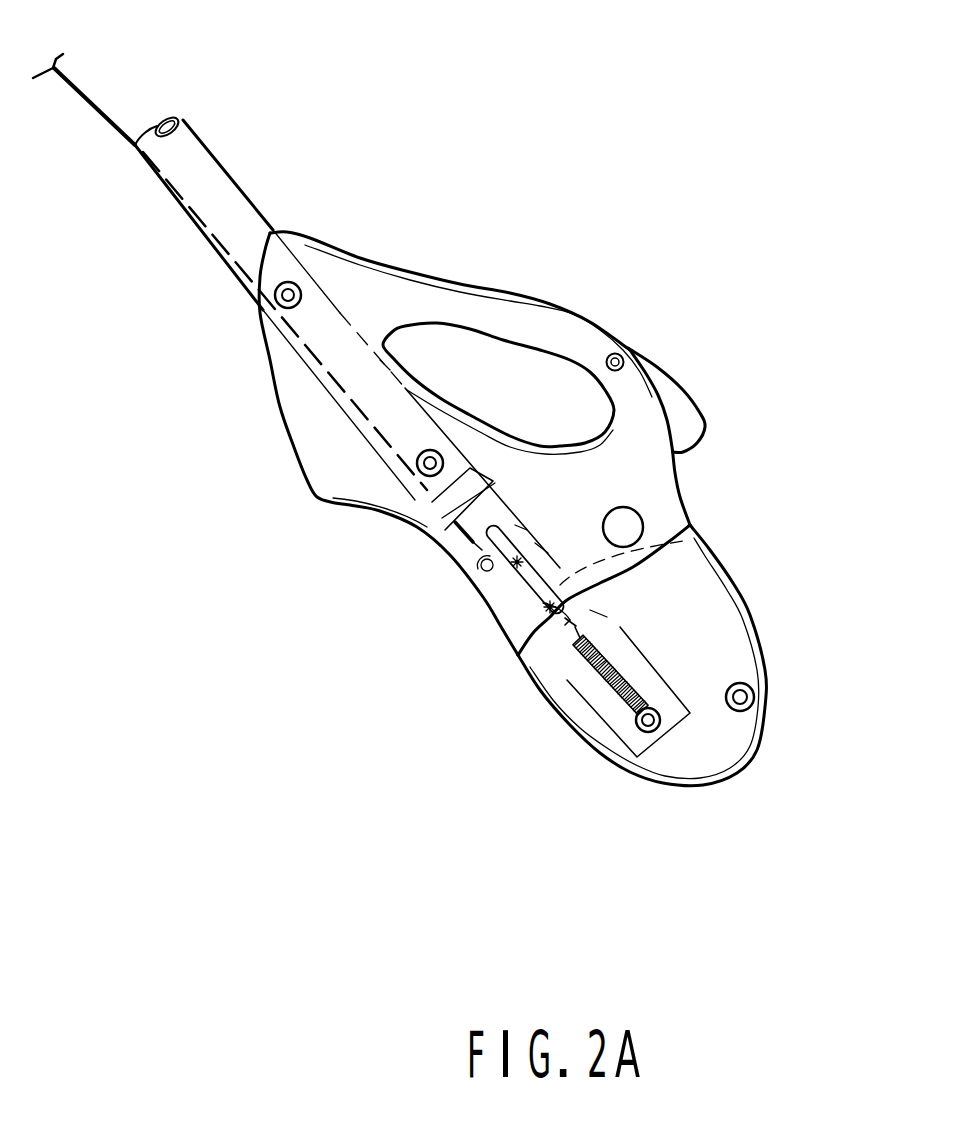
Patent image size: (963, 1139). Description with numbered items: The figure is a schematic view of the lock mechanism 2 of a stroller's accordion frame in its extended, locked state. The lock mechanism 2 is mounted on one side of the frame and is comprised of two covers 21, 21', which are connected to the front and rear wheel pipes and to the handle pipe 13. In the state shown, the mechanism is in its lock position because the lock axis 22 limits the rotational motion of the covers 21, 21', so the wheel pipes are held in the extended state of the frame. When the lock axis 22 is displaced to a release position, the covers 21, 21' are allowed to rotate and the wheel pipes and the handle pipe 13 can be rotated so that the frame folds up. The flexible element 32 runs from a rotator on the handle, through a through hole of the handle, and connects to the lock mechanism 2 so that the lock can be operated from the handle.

The lock mechanism 2 is at (730, 490).
The handle pipe 13 is at (228, 200).
The cover 21 is at (476, 384).
The cover 21' is at (691, 655).
The lock axis 22 is at (517, 620).
The flexible element 32 is at (83, 93).